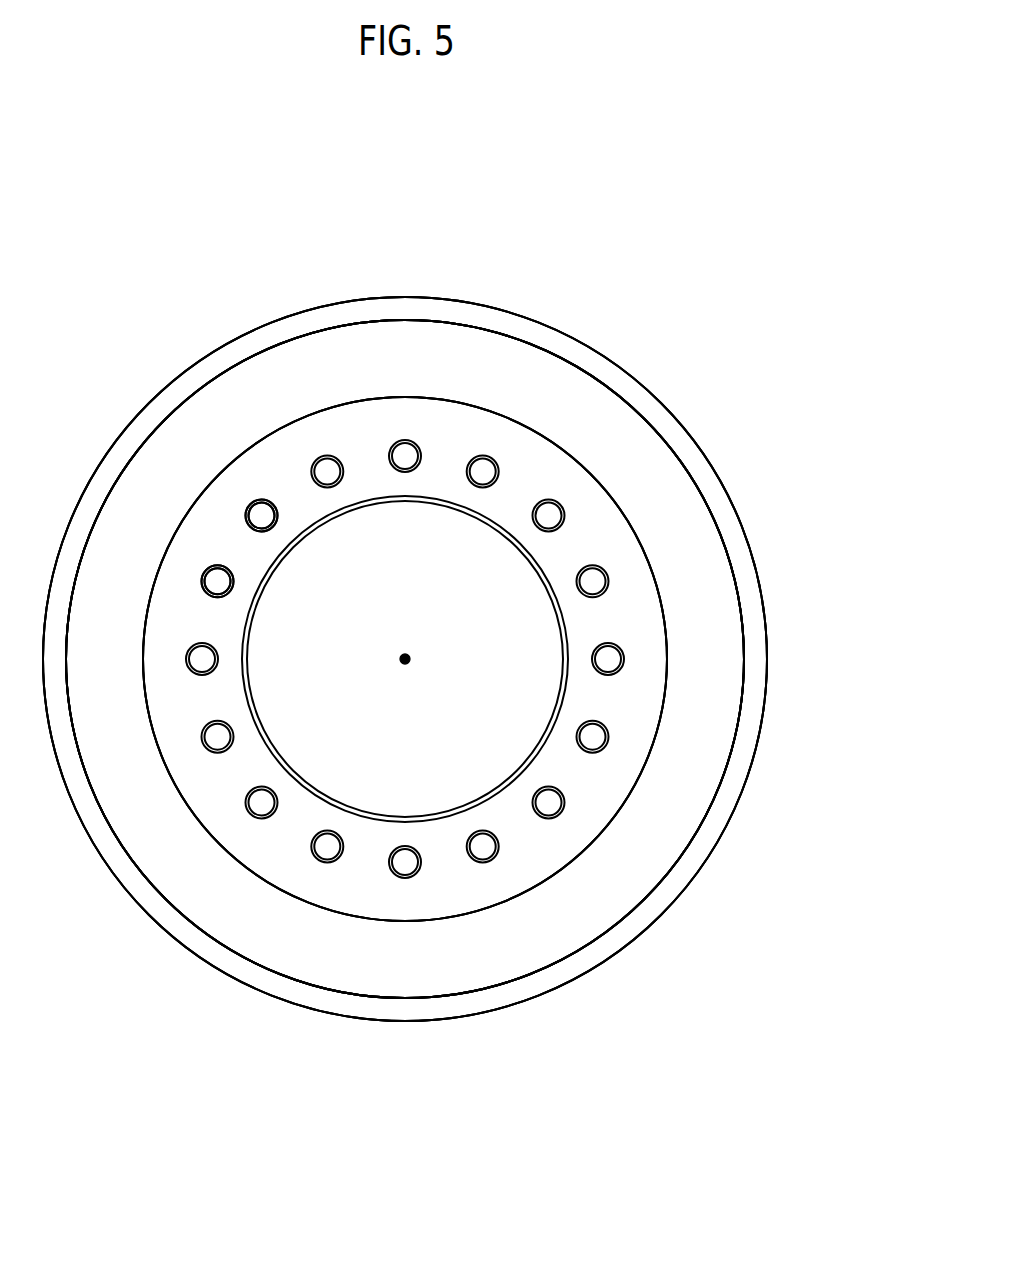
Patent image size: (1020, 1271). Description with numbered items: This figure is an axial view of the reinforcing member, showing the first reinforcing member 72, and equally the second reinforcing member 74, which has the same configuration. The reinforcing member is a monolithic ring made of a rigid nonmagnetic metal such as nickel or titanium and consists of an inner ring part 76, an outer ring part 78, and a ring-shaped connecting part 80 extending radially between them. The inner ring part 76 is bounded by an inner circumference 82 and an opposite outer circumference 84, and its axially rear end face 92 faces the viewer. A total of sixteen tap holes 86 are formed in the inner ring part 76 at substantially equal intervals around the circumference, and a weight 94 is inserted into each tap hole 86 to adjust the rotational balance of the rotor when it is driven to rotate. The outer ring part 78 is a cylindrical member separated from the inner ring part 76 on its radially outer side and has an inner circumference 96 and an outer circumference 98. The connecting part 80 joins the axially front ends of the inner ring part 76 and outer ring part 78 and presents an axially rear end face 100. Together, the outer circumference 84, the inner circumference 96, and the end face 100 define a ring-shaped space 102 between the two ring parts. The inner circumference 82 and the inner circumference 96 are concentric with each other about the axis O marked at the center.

The first reinforcing member 72 is at (708, 117).
The second reinforcing member 74 is at (405, 659).
The inner ring part 76 is at (528, 470).
The outer ring part 78 is at (723, 510).
The connecting part 80 is at (653, 480).
The inner circumference 82 is at (452, 812).
The outer circumference 84 is at (412, 924).
The tap holes 86 is at (326, 470).
The end face 92 is at (292, 835).
The weight 94 is at (217, 577).
The inner circumference 96 is at (740, 697).
The outer circumference 98 is at (700, 873).
The end face 100 is at (707, 600).
The ring-shaped space 102 is at (82, 677).
The axis O is at (404, 658).